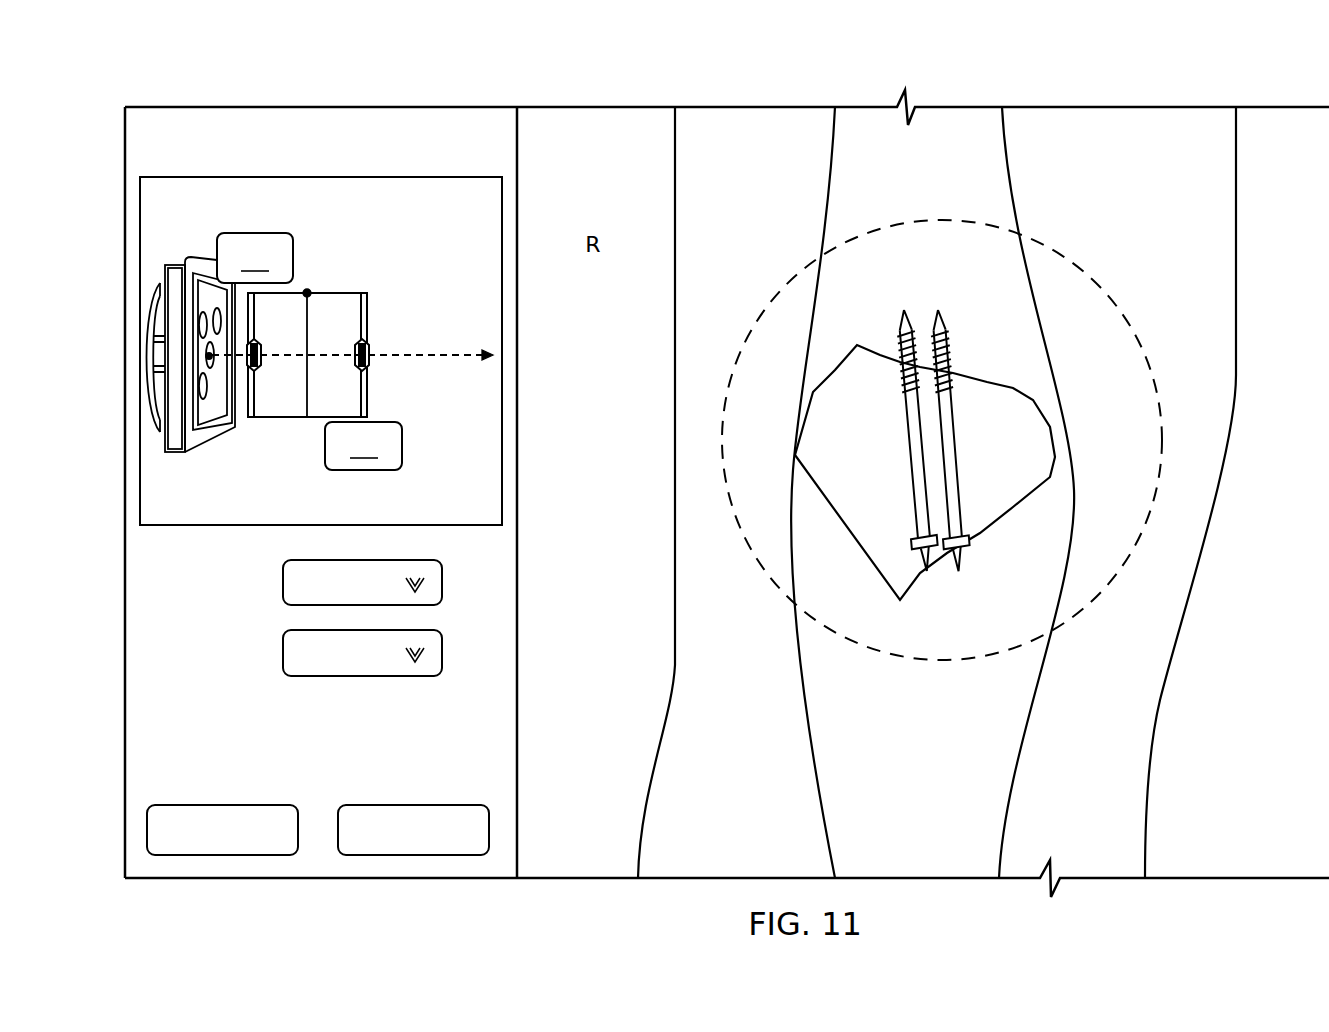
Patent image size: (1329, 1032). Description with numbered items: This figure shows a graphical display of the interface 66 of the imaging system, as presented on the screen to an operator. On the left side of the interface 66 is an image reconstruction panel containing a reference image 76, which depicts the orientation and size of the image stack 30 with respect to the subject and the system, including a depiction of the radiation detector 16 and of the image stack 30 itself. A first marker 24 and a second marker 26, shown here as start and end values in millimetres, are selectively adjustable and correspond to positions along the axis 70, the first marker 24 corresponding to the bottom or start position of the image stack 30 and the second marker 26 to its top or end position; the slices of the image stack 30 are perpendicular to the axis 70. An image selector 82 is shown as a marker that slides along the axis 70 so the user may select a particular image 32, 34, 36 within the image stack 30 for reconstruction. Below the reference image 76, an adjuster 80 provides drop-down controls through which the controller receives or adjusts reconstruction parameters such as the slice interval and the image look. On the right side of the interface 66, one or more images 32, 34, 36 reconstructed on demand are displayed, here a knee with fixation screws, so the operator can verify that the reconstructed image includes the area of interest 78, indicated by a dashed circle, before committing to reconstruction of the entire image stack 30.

The interface 66 is at (117, 116).
The reference image 76 is at (334, 104).
The image 32 is at (1030, 101).
The image 34 is at (925, 472).
The image 36 is at (931, 440).
The radiation detector 16 is at (188, 443).
The image stack 30 is at (283, 420).
The image selector 82 is at (312, 315).
The axis 70 is at (434, 352).
The first marker 24 is at (293, 256).
The second marker 26 is at (402, 441).
The adjuster 80 is at (442, 597).
The area of interest 78 is at (1068, 255).